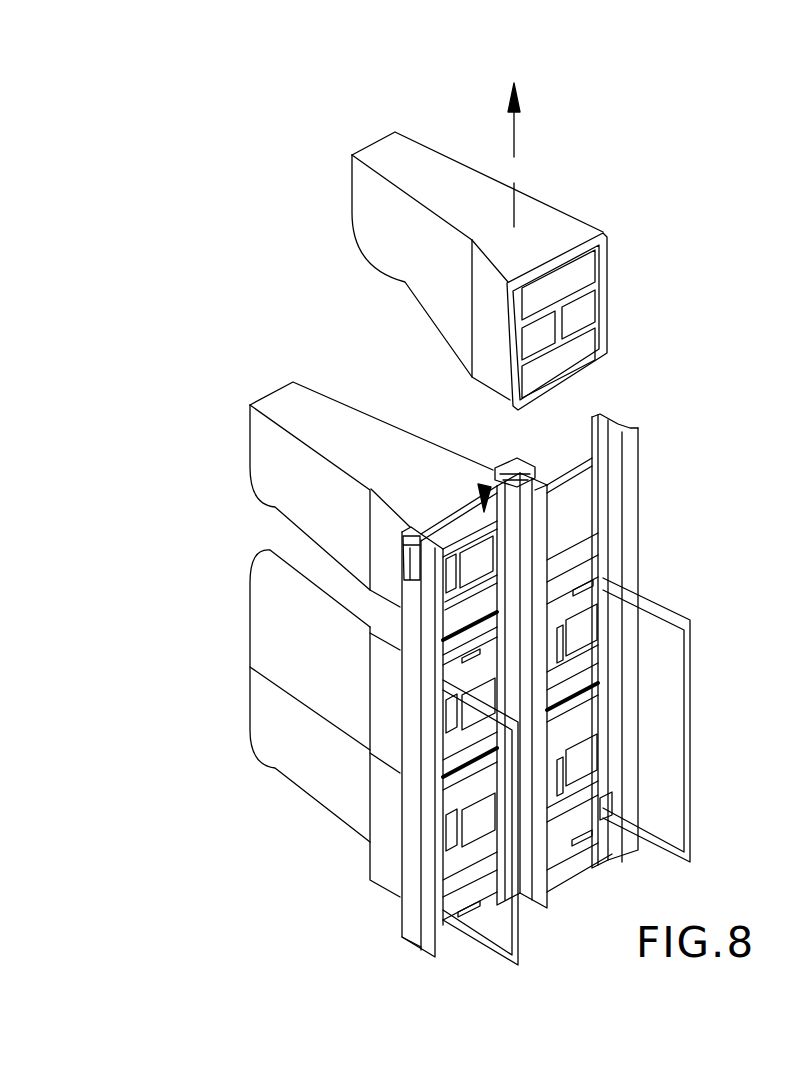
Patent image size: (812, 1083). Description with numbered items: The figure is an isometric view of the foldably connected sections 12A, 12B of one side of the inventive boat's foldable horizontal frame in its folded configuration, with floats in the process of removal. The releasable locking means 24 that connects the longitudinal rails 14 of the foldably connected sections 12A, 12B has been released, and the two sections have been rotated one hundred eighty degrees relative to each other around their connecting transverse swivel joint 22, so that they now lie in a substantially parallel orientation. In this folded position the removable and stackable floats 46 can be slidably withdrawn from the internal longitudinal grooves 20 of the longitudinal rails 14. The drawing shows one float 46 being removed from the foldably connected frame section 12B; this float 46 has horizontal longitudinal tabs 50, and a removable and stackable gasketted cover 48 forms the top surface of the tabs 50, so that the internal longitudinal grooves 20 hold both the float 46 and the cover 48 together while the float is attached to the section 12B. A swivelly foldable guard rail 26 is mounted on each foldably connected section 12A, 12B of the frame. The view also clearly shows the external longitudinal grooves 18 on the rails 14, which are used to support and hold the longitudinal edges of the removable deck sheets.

The foldably connected section 12A is at (402, 727).
The foldably connected section 12B is at (654, 576).
The longitudinal rail 14 is at (630, 520).
The external longitudinal groove 18 is at (632, 428).
The internal longitudinal groove 20 is at (505, 465).
The transverse swivel joint 22 is at (535, 490).
The releasable locking means 24 is at (412, 565).
The swivelly foldable guard rail 26 is at (692, 742).
The removable and stackable float 46 is at (403, 250).
The removable and stackable gasketted cover 48 is at (580, 293).
The horizontal longitudinal tab 50 is at (603, 236).